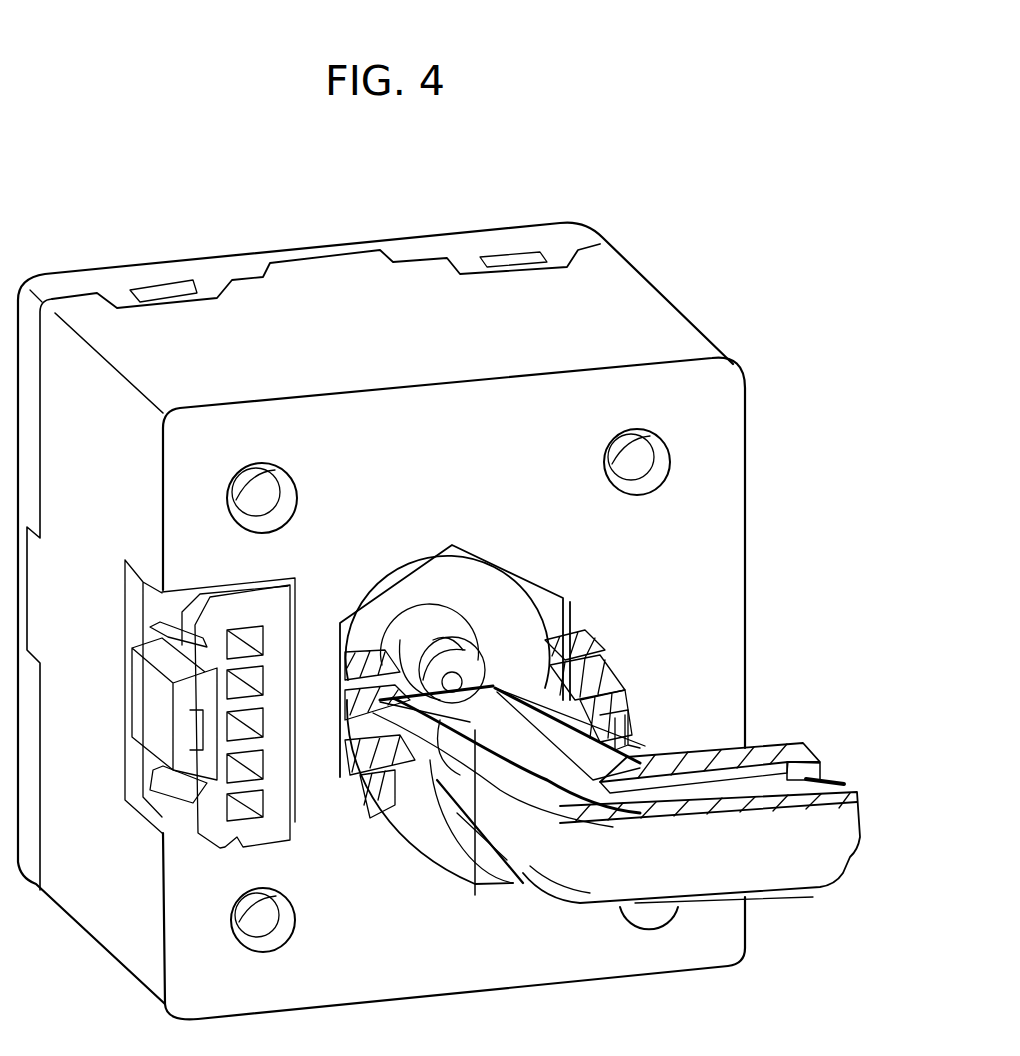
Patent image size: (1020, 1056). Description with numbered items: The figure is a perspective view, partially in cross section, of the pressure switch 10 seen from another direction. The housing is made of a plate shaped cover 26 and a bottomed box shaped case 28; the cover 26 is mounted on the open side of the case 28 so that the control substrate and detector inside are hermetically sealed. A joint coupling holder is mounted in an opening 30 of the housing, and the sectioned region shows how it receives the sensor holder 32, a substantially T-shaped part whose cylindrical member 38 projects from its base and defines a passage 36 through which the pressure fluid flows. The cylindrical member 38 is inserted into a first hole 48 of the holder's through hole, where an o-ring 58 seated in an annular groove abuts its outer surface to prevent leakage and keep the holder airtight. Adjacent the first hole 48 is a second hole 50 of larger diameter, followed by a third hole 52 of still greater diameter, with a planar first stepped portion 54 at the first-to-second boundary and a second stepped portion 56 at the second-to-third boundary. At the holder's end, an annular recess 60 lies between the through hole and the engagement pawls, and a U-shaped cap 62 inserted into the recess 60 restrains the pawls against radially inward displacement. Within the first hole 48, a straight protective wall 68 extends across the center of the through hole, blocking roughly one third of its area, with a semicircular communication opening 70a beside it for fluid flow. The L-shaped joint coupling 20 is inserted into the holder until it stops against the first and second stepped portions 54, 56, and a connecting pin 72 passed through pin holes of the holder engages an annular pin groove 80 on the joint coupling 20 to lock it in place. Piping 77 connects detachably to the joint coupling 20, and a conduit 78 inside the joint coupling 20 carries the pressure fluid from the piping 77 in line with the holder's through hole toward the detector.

The pressure switch 10 is at (106, 141).
The cover 26 is at (229, 264).
The case 28 is at (745, 450).
The opening 30 is at (530, 620).
The sensor holder 32 is at (453, 600).
The passage 36 is at (412, 672).
The cylindrical member 38 is at (452, 680).
The o-ring 58 is at (417, 620).
The annular recess 60 is at (360, 680).
The first stepped portion 54 is at (352, 706).
The second stepped portion 56 is at (372, 742).
The pin groove 80 is at (376, 800).
The third hole 52 is at (412, 826).
The cap 62 is at (570, 638).
The first hole 48 is at (562, 662).
The second hole 50 is at (578, 702).
The protective wall 68 is at (480, 700).
The communication opening 70a is at (475, 830).
The connecting pin 72 is at (636, 712).
The conduit 78 is at (725, 783).
The piping 77 is at (805, 775).
The joint coupling 20 is at (789, 906).